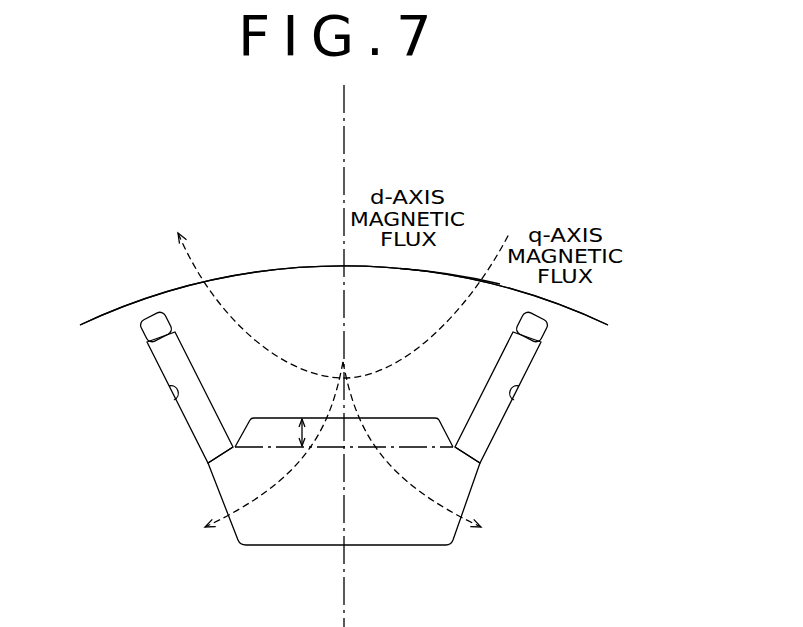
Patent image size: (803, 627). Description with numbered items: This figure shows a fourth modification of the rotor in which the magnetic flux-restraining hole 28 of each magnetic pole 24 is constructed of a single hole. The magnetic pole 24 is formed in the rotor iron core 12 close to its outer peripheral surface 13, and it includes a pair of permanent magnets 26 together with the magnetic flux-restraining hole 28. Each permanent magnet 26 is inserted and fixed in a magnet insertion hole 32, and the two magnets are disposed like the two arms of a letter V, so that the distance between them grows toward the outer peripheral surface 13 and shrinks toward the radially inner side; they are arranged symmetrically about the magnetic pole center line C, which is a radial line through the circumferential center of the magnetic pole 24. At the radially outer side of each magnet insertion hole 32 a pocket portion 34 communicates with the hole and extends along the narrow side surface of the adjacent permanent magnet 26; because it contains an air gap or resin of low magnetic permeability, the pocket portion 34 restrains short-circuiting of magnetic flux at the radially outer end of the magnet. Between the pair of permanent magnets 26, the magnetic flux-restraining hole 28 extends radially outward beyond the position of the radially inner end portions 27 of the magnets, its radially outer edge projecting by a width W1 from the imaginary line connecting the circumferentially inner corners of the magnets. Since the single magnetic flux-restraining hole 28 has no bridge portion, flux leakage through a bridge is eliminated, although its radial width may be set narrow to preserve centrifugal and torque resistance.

The rotor iron core 12 is at (244, 274).
The outer peripheral surface 13 is at (316, 266).
The magnetic pole 24 is at (444, 292).
The permanent magnet 26 is at (190, 404).
The radially inner end portion 27 is at (218, 452).
The magnetic flux-restraining hole 28 is at (344, 481).
The magnet insertion hole 32 is at (167, 389).
The pocket portion 34 is at (166, 320).
The magnetic pole center line C is at (344, 127).
The width W1 is at (302, 419).